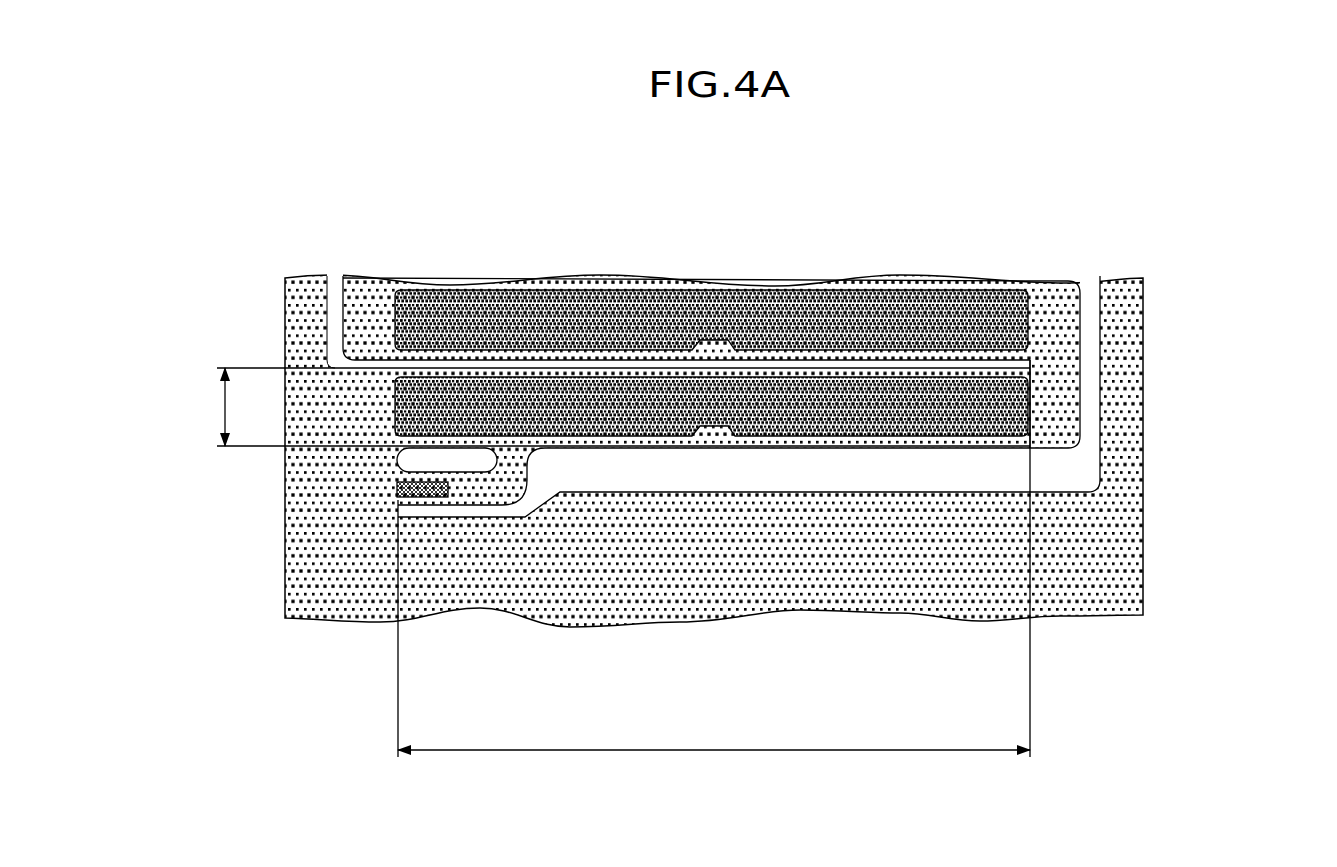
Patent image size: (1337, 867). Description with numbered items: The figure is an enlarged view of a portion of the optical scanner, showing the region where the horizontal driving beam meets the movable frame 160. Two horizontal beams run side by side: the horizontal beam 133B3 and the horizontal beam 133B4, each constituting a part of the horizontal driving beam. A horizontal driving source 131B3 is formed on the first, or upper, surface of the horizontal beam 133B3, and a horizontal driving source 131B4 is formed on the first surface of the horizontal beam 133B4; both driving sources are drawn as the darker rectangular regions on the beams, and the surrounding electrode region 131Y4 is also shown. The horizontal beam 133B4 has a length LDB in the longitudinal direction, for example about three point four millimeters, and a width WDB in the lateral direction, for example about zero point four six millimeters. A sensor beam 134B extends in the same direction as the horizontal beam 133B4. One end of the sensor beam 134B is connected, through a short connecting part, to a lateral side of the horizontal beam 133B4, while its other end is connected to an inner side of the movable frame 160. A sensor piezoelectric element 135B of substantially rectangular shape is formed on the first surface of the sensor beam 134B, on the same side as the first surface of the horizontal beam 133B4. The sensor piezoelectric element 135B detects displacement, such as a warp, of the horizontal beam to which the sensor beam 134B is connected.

The movable frame 160 is at (1108, 552).
The electrode 131Y4 is at (1062, 358).
The third bright portion 131B3 is at (567, 322).
The horizontal driving source 131B4 is at (836, 408).
The third slit 133B3 is at (669, 361).
The horizontal beam 133B4 is at (919, 448).
The sensor beam 134B is at (481, 493).
The sensor piezoelectric element 135B is at (398, 490).
The width of the horizontal beam WDB is at (594, 407).
The length of the horizontal beam LDB is at (714, 558).